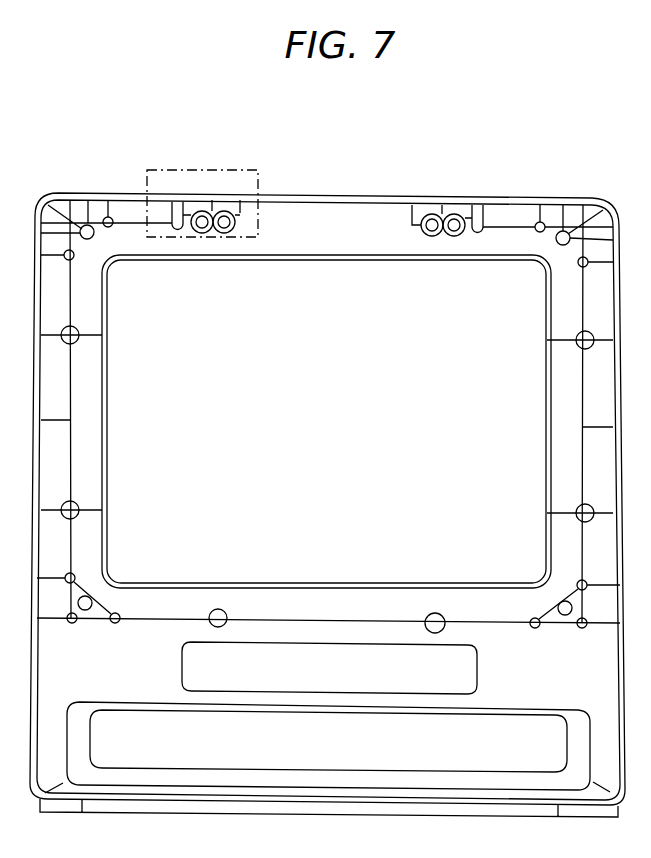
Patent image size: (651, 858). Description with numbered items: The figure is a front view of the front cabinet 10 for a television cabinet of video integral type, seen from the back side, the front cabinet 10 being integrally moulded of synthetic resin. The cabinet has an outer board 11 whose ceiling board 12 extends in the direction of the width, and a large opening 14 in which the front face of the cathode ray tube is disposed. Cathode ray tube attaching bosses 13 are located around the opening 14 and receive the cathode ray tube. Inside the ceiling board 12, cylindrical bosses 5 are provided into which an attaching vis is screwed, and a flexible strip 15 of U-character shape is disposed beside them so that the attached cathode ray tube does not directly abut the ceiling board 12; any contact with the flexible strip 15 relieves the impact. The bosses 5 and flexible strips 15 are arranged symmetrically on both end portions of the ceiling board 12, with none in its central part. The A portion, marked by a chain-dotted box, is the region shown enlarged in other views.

The cylindrical boss 5 is at (204, 233).
The front cabinet 10 is at (514, 186).
The outer board 11 is at (344, 306).
The ceiling board 12 is at (321, 193).
The cathode ray tube attaching boss 13 is at (92, 236).
The opening 14 is at (108, 410).
The flexible strip 15 is at (170, 211).
The A portion A is at (207, 166).